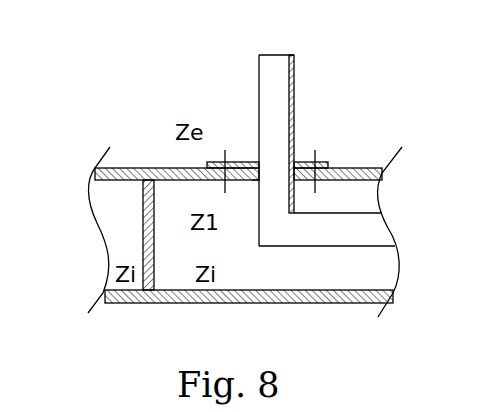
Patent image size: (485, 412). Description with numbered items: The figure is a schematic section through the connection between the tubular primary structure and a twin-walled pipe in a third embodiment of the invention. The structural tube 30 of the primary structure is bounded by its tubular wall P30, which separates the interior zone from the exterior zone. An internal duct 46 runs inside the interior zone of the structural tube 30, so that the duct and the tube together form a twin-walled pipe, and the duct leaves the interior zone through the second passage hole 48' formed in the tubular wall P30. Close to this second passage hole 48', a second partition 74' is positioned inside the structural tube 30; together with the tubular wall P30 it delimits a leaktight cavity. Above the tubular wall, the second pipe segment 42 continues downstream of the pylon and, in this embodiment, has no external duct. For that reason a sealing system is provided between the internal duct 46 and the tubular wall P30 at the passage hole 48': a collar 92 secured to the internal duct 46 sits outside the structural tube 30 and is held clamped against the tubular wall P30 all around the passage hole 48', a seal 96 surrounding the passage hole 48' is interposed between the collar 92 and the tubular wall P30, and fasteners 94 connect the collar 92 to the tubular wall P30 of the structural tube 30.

The tubular wall P30 is at (135, 167).
The second pipe segment 42 is at (278, 83).
The internal duct 46 is at (358, 228).
The seal 96 is at (256, 163).
The fasteners 94 is at (313, 157).
The collar 92 is at (329, 165).
The second partition 74' is at (92, 235).
The structural tube 30 is at (125, 302).
The second passage hole 48' is at (241, 218).